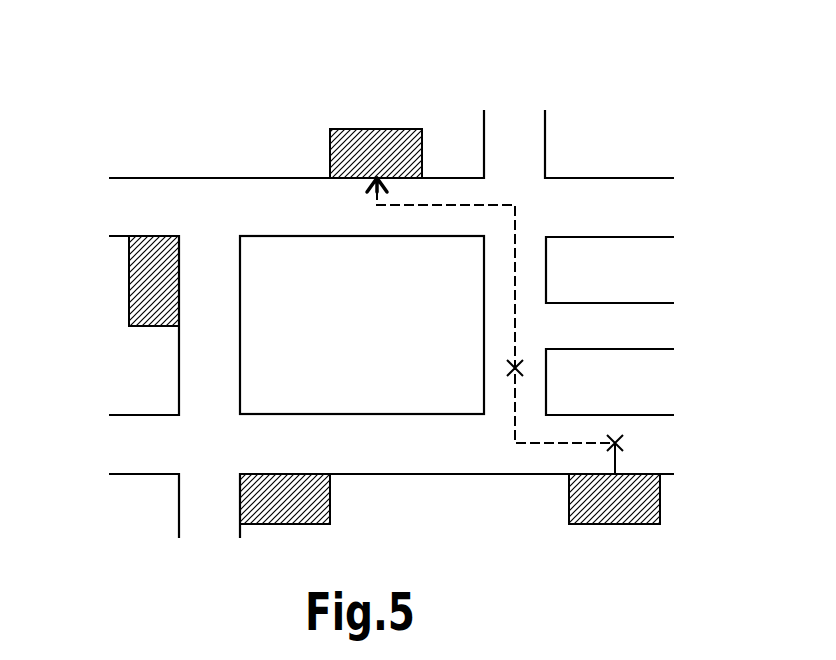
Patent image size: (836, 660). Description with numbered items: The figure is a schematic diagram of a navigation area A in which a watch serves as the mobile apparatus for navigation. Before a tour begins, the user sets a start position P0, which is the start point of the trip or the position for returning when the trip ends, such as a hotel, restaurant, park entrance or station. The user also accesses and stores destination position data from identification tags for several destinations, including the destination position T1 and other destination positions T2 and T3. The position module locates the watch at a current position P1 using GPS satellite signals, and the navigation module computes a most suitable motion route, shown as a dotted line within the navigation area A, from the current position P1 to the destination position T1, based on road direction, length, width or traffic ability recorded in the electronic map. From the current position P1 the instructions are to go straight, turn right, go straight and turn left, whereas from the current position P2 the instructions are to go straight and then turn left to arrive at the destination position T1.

The navigation area A is at (603, 78).
The destination position T1 is at (380, 140).
The destination position T2 is at (143, 295).
The destination position T3 is at (290, 508).
The start position P0 is at (613, 508).
The current position P1 is at (617, 437).
The current position P2 is at (517, 358).